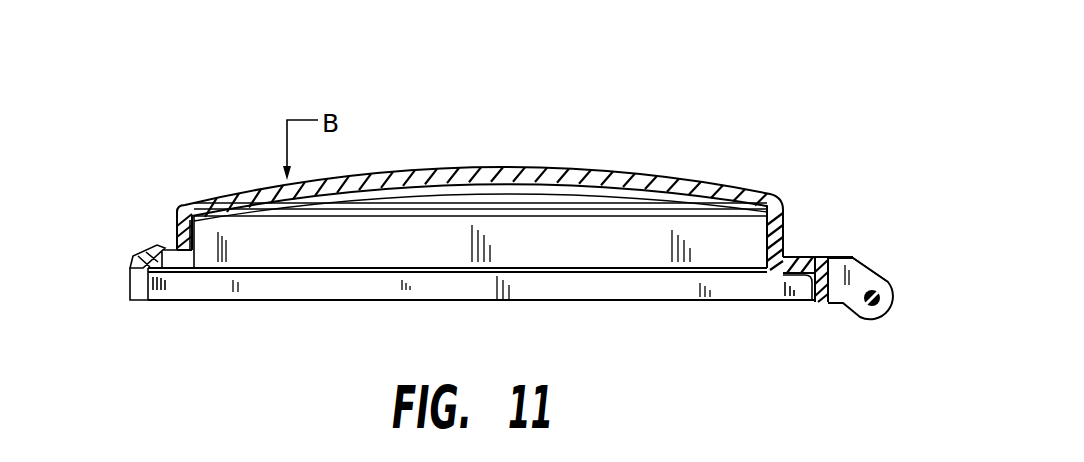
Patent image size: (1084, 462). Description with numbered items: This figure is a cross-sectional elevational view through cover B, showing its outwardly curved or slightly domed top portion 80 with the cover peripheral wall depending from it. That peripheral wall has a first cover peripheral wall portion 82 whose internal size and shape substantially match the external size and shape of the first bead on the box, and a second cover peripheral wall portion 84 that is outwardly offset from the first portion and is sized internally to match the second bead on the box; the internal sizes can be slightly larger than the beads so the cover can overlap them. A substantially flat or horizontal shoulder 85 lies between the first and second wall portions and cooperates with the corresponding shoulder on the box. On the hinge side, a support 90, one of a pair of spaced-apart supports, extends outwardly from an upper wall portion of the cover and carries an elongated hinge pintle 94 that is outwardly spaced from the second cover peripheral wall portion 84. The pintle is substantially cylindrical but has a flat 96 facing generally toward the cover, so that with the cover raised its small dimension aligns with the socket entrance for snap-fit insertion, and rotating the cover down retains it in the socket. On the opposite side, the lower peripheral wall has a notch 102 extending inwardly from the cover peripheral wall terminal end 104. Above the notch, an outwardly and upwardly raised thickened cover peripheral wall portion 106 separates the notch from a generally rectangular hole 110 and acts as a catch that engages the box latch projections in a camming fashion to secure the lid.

The top portion 80 is at (451, 173).
The first cover peripheral wall portion 82 is at (760, 240).
The second cover peripheral wall portion 84 is at (813, 292).
The shoulder 85 is at (780, 271).
The support 90 is at (853, 258).
The hinge pintle 94 is at (880, 298).
The flat 96 is at (856, 279).
The notch 102 is at (143, 288).
The cover peripheral wall terminal end 104 is at (284, 300).
The thickened cover peripheral wall portion 106 is at (152, 245).
The rectangular hole 110 is at (178, 243).